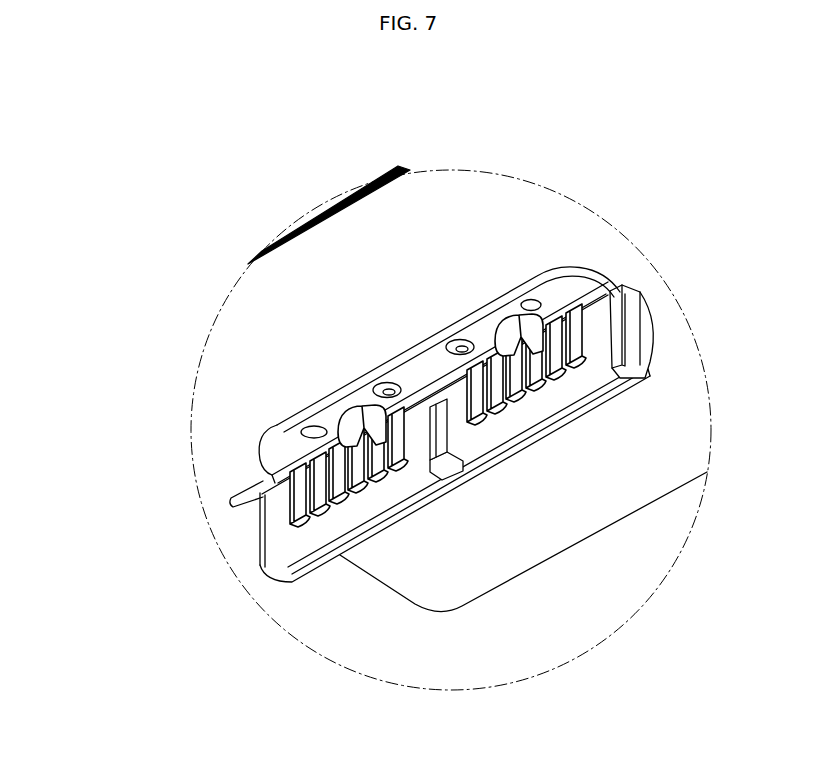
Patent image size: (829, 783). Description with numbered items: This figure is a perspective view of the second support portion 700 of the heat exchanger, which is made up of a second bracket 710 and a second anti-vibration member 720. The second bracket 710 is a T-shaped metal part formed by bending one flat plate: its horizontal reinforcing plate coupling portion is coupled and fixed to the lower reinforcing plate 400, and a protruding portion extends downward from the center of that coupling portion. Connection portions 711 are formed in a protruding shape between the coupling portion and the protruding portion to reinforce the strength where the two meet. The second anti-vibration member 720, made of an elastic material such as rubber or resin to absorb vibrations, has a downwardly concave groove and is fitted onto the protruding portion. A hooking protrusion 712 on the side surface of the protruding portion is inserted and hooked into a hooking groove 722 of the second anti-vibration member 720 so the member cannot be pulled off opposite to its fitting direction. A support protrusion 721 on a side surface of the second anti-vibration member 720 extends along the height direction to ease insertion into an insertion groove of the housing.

The lower reinforcing plate 400 is at (305, 266).
The second support portion 700 is at (78, 447).
The second bracket 710 is at (258, 428).
The connection portions 711 is at (357, 428).
The hooking protrusion 712 is at (437, 432).
The second anti-vibration member 720 is at (262, 524).
The support protrusion 721 is at (618, 333).
The hooking groove 722 is at (430, 478).